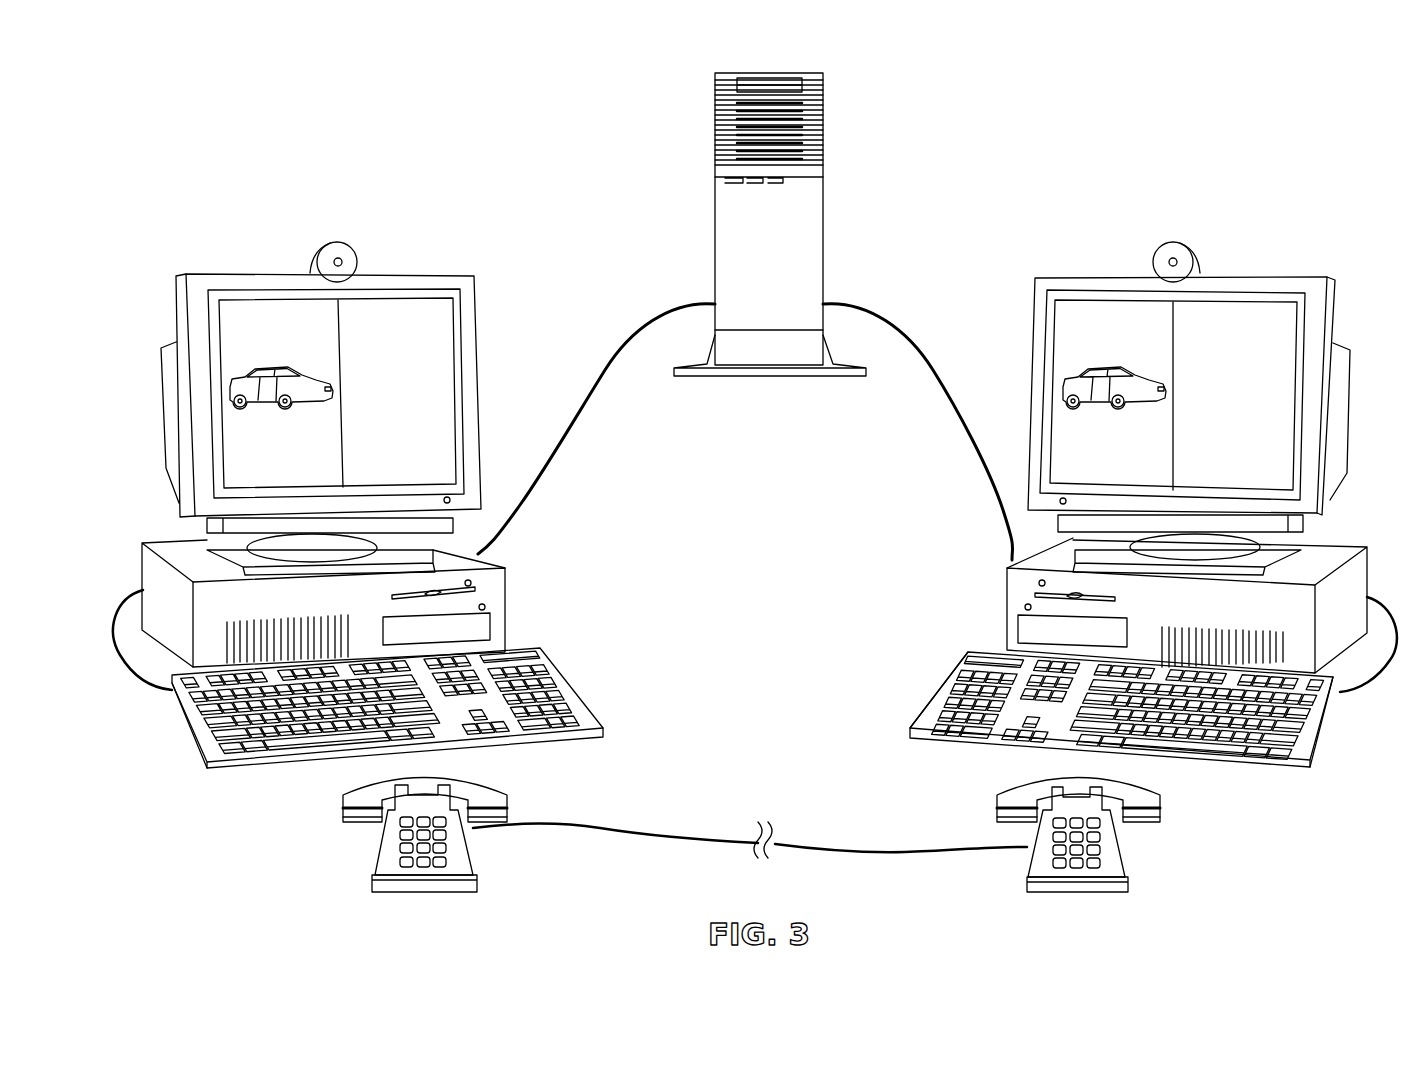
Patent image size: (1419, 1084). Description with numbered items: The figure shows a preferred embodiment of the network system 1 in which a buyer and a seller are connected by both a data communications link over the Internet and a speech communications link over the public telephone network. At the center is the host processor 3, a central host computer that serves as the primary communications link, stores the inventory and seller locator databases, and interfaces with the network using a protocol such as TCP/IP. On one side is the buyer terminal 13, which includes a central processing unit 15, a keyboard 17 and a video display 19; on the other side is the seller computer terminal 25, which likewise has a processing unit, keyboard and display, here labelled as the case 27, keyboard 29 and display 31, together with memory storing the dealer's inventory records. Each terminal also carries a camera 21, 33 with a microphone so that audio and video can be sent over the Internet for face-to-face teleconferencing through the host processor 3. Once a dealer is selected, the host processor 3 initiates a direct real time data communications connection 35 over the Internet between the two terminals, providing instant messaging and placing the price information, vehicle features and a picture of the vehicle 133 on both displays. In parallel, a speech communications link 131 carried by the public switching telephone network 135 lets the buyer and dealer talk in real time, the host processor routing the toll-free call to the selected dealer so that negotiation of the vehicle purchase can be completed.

The network system 1 is at (630, 120).
The host processor 3 is at (827, 221).
The buyer terminal 13 is at (968, 617).
The central processing unit 15 is at (1007, 567).
The keyboard 17 is at (945, 680).
The video display 19 is at (1260, 322).
The camera 21 is at (1167, 253).
The seller computer terminal 25 is at (540, 624).
The computer case 27 is at (507, 575).
The keyboard 29 is at (583, 700).
The display 31 is at (443, 425).
The camera 33 is at (345, 258).
The data communications connection 35 is at (575, 417).
The speech communications link 131 is at (904, 853).
The vehicle 133 is at (233, 368).
The public switching telephone network 135 is at (770, 823).